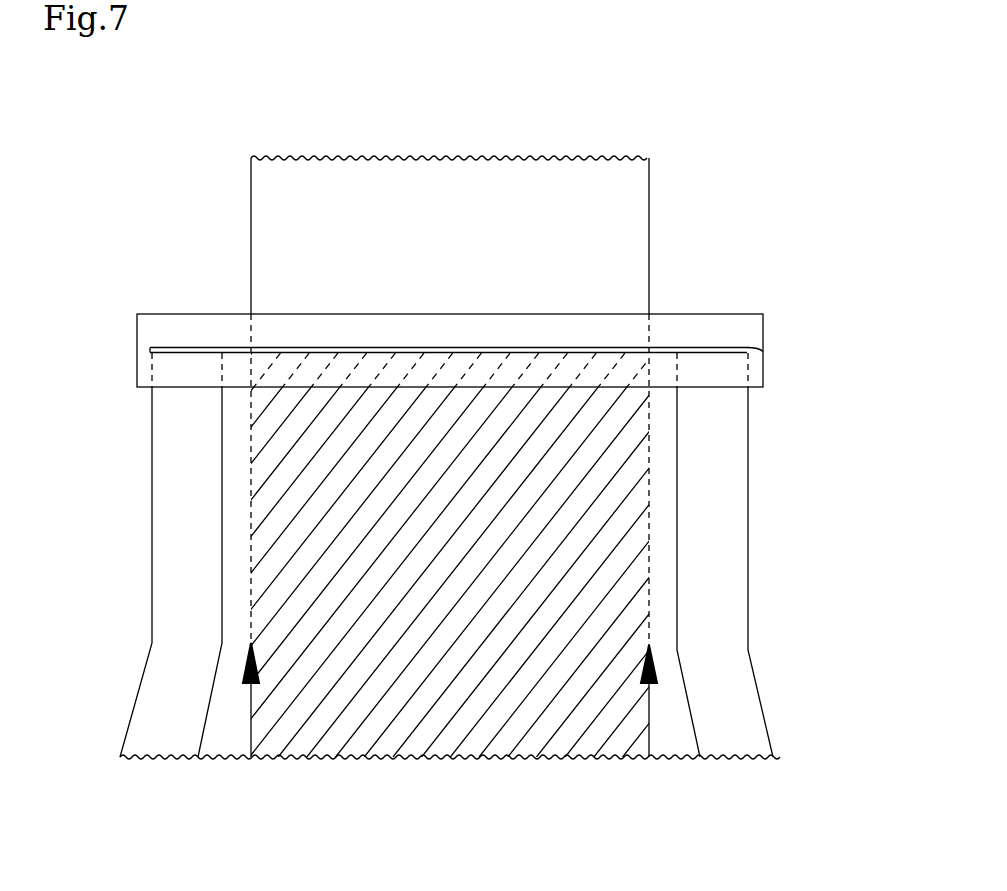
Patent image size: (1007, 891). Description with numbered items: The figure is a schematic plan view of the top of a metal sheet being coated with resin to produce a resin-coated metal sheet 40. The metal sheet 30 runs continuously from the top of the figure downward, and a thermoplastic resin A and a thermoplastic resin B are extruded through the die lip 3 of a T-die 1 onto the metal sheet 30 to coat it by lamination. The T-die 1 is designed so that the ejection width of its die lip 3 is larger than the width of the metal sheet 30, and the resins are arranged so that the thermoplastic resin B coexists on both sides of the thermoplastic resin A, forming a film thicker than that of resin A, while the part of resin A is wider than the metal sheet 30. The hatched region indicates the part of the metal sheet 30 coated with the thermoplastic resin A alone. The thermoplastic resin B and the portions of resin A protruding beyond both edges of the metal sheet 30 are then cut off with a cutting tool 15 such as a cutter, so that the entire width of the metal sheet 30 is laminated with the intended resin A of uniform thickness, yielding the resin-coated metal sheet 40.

The metal sheet 30 is at (649, 207).
The T-die 1 is at (763, 327).
The die lip 3 is at (750, 350).
The resin-coated metal sheet 40 is at (475, 743).
The cutting tool 15 is at (655, 795).
The thermoplastic resin A is at (722, 802).
The thermoplastic resin B is at (802, 810).